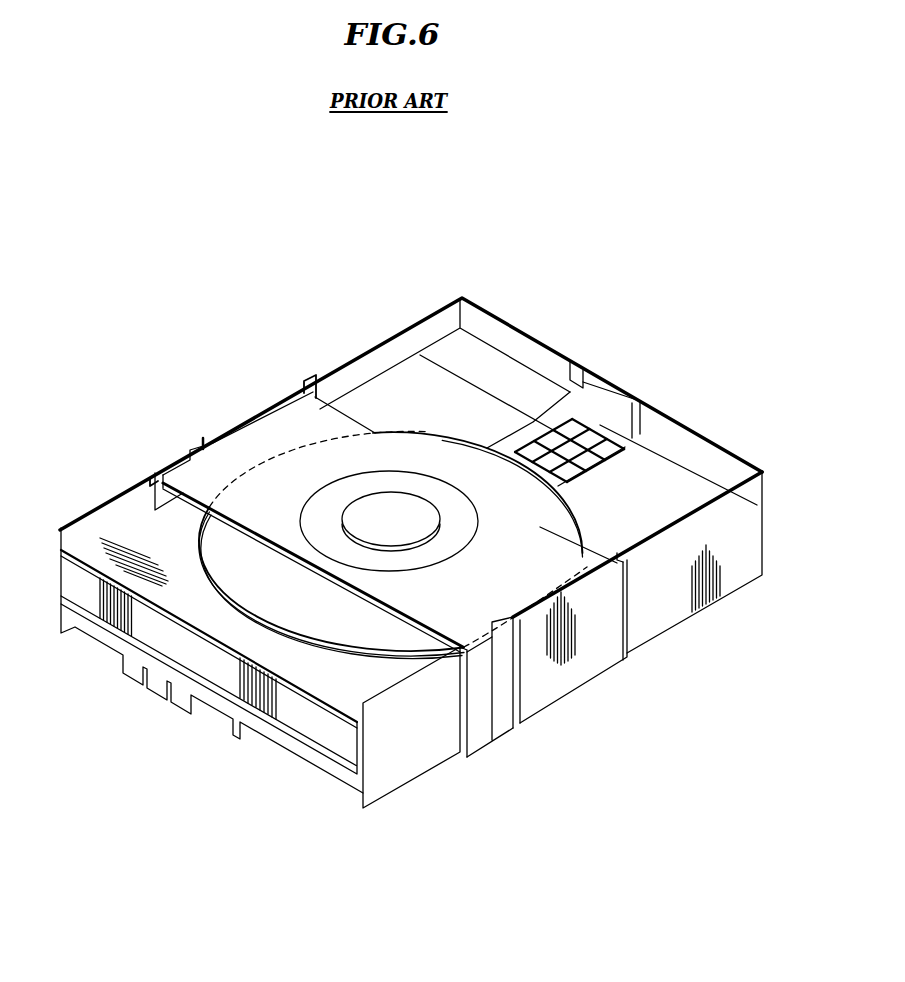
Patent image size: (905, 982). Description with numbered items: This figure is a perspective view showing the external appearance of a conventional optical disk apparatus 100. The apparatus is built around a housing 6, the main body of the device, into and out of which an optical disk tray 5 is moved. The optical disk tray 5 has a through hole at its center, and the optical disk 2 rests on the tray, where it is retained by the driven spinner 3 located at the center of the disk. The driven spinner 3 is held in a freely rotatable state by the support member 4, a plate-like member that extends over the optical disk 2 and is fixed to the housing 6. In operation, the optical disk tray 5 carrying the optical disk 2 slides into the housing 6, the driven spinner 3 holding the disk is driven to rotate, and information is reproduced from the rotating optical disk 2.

The optical disk apparatus 100 is at (190, 242).
The optical disk 2 is at (283, 588).
The driven spinner 3 is at (367, 507).
The support member 4 is at (243, 447).
The optical disk tray 5 is at (643, 512).
The housing 6 is at (560, 700).